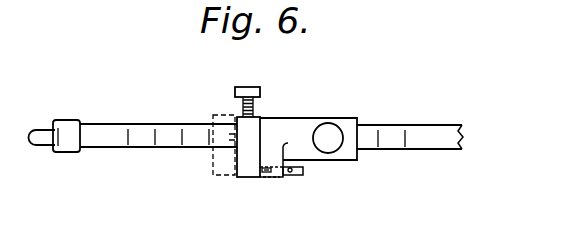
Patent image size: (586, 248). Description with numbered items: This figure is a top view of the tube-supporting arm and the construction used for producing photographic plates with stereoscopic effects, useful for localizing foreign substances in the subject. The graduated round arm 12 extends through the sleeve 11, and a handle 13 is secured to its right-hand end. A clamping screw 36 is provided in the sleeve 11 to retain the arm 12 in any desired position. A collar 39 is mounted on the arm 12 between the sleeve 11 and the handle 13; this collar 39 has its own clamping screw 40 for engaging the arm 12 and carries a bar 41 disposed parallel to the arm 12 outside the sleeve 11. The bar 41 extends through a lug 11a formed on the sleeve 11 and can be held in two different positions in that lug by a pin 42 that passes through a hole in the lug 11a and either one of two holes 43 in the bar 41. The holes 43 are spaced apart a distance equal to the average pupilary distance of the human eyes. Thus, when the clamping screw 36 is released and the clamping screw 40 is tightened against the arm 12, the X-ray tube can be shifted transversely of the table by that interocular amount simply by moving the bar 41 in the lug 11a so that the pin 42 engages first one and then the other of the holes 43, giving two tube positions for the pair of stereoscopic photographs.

The sleeve 11 is at (301, 121).
The lug 11a is at (274, 178).
The arm 12 is at (418, 127).
The handle 13 is at (62, 121).
The clamping screw 36 is at (338, 128).
The collar 39 is at (243, 171).
The clamping screw 40 is at (243, 87).
The bar 41 is at (303, 172).
The pin 42 is at (263, 173).
The holes 43 is at (291, 174).